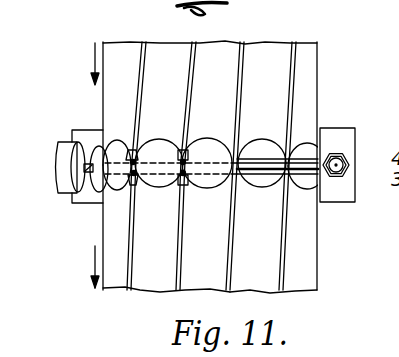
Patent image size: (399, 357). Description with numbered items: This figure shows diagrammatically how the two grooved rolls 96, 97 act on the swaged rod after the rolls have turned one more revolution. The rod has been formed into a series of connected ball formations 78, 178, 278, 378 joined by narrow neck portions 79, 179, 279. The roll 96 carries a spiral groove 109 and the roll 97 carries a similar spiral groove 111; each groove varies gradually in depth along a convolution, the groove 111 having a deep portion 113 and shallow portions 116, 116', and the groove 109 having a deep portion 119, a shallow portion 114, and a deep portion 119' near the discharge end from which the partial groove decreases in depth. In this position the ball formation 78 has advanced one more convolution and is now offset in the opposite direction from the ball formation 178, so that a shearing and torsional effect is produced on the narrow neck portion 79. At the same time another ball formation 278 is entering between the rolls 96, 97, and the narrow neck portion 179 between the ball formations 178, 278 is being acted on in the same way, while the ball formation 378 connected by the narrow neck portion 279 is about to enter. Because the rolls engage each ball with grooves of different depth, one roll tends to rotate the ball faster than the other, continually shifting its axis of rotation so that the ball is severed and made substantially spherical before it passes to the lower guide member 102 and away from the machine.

The roll 97 is at (228, 42).
The groove 111 is at (277, 50).
The roll 96 is at (200, 292).
The groove 109 is at (258, 283).
The guide member 102 is at (268, 167).
The ball formation 378 is at (44, 176).
The narrow neck portion 279 is at (85, 129).
The ball formation 278 is at (72, 203).
The paddle blade 116 is at (142, 124).
The deep portion of groove 119 is at (163, 203).
The deep portion of groove 113 is at (160, 141).
The shallow portion of groove 114 is at (158, 188).
The shallow portion of groove 116' is at (327, 133).
The deep portion of groove 119' is at (328, 199).
The narrow neck portion 179 is at (131, 158).
The ball formation 178 is at (136, 158).
The narrow neck portion 79 is at (198, 146).
The ball formation 78 is at (203, 190).